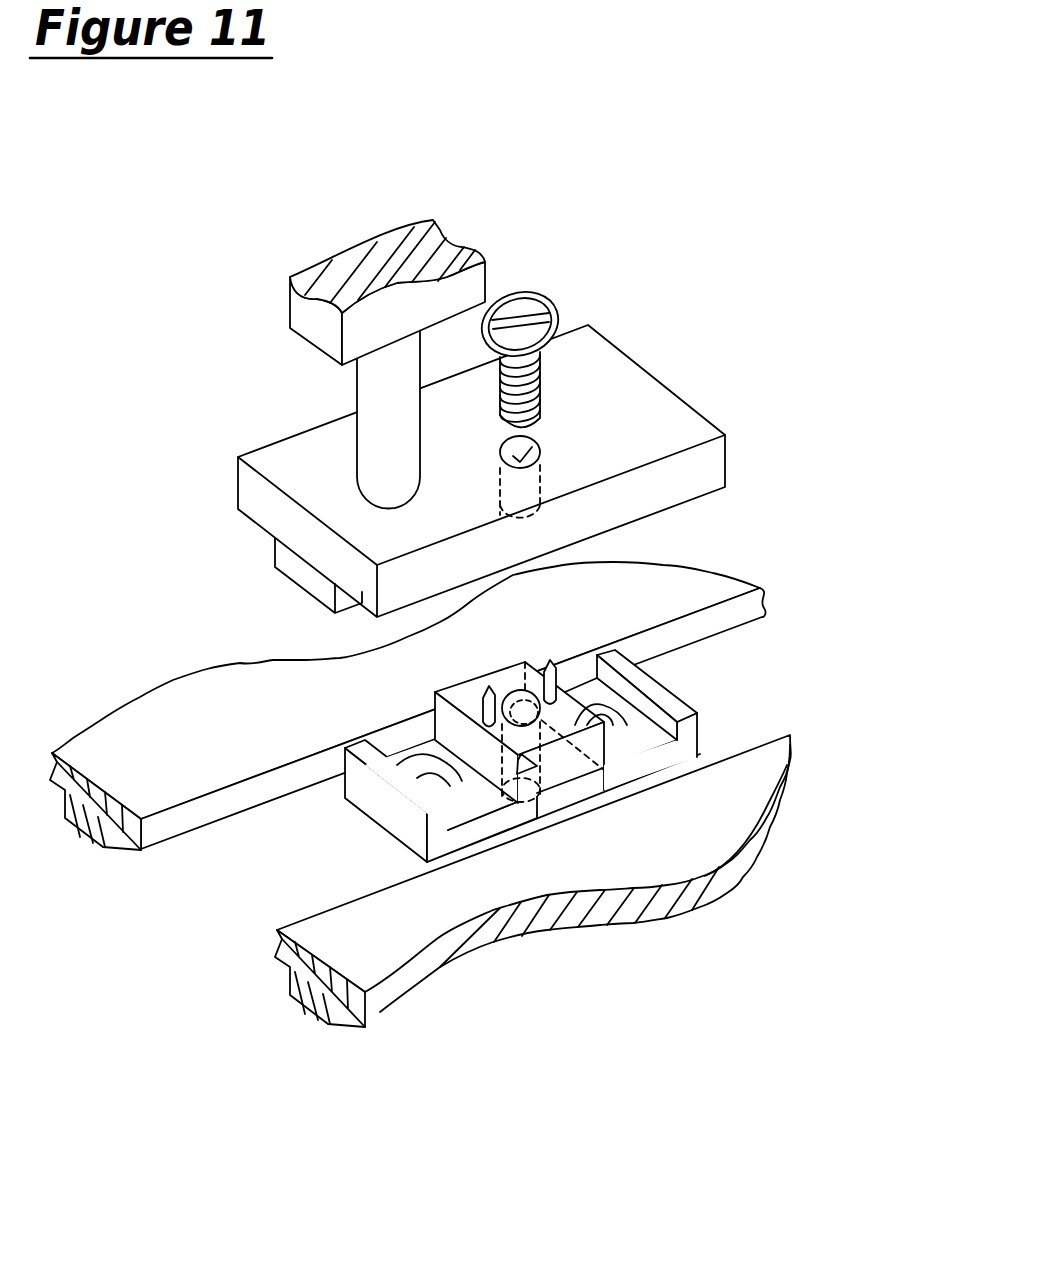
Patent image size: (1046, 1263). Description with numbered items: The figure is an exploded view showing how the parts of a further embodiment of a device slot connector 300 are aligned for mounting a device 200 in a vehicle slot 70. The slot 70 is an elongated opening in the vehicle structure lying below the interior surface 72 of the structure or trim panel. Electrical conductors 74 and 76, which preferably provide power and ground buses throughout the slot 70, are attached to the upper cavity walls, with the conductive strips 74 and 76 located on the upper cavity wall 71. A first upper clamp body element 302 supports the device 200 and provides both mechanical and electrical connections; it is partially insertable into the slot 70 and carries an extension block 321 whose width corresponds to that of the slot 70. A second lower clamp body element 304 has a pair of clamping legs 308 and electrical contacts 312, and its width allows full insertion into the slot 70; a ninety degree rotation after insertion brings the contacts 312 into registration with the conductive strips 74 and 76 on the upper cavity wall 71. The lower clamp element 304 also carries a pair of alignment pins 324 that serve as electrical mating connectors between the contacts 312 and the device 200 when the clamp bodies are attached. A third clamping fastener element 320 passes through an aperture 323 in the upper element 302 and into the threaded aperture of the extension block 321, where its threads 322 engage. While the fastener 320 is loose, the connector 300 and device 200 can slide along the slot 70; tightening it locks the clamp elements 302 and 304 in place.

The device 200 is at (418, 325).
The device slot connector 300 is at (596, 621).
The first upper clamp body element 302 is at (660, 377).
The second lower clamp body element 304 is at (680, 742).
The clamping legs 308 is at (380, 800).
The electrical contacts 312 is at (420, 763).
The clamping fastener element 320 is at (514, 298).
The extension block 321 is at (307, 590).
The threads 322 is at (550, 360).
The aperture 323 is at (537, 448).
The alignment pins 324 is at (548, 668).
The slot 70 is at (223, 805).
The upper cavity wall 71 is at (283, 958).
The interior surface 72 is at (258, 744).
The electrical conductor 74 is at (320, 1000).
The electrical conductor 76 is at (95, 842).